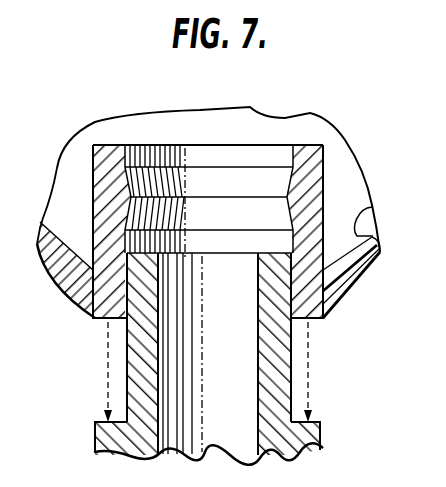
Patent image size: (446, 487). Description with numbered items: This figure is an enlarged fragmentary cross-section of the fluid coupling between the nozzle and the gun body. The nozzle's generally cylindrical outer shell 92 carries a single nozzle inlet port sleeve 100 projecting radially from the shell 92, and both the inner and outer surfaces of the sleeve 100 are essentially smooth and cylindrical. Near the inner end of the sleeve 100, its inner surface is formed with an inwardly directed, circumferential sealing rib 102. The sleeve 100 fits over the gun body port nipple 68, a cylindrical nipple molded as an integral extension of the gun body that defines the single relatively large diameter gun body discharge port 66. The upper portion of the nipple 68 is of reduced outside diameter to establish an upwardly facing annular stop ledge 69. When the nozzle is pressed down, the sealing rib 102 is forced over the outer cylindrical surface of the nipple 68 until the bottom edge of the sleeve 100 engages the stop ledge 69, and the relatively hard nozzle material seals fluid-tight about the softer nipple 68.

The gun body discharge port 66 is at (232, 366).
The gun body port nipple 68 is at (292, 372).
The stop ledge 69 is at (315, 421).
The outer shell 92 is at (376, 203).
The nozzle inlet port sleeve 100 is at (106, 162).
The sealing rib 102 is at (185, 150).